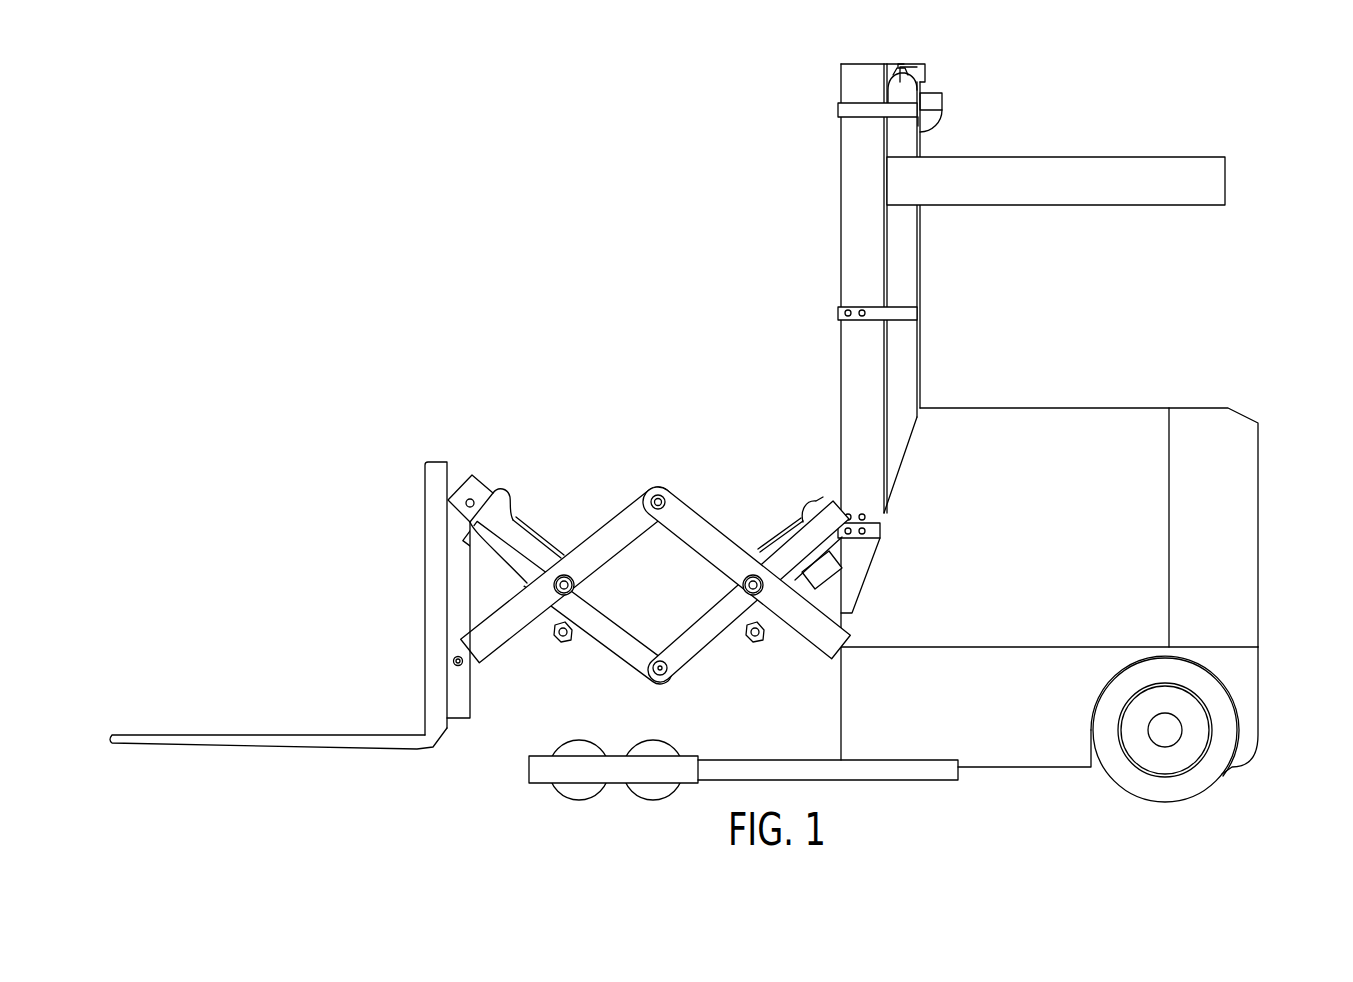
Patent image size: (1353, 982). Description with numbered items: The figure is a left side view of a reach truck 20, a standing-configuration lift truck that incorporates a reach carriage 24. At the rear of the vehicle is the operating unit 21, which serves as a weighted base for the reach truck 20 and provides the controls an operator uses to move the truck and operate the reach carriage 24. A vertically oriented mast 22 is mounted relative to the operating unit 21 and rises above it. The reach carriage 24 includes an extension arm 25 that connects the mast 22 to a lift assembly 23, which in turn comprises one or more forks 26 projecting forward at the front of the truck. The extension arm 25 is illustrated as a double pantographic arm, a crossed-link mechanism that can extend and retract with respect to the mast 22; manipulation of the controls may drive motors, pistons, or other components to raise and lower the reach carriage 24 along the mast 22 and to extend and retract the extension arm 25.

The reach truck 20 is at (414, 205).
The operating unit 21 is at (1141, 418).
The mast 22 is at (840, 150).
The lift assembly 23 is at (424, 512).
The reach carriage 24 is at (427, 443).
The extension arm 25 is at (624, 663).
The fork 26 is at (278, 746).